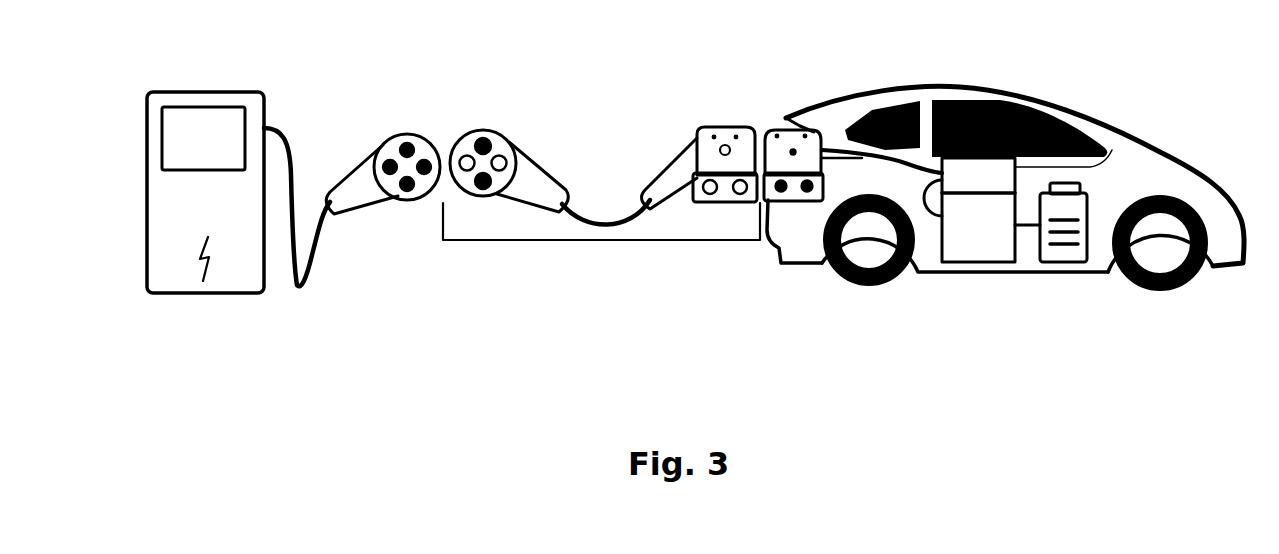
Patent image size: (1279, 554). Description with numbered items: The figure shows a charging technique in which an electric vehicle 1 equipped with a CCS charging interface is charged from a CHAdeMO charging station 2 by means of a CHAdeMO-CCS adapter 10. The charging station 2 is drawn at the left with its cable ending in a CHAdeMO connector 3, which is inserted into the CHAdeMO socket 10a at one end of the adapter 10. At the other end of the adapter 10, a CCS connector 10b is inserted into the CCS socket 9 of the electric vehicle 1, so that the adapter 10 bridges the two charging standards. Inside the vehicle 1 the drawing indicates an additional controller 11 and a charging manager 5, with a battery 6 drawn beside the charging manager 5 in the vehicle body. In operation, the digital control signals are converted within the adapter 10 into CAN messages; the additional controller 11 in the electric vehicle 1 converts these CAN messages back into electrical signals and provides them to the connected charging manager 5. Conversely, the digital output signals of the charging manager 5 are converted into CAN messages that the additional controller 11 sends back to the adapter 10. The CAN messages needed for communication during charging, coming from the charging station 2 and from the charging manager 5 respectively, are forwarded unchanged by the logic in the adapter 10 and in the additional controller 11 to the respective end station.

The electric vehicle 1 is at (1050, 103).
The CHAdeMO charging station 2 is at (190, 93).
The CHAdeMO connector 3 is at (420, 130).
The charging manager 5 is at (945, 268).
The traction battery 6 is at (1075, 263).
The CCS socket 9 is at (775, 128).
The CHAdeMO-CCS adapter 10 is at (601, 223).
The CHAdeMO socket 10a is at (498, 123).
The CCS connector 10b is at (673, 147).
The additional controller 11 is at (1108, 156).